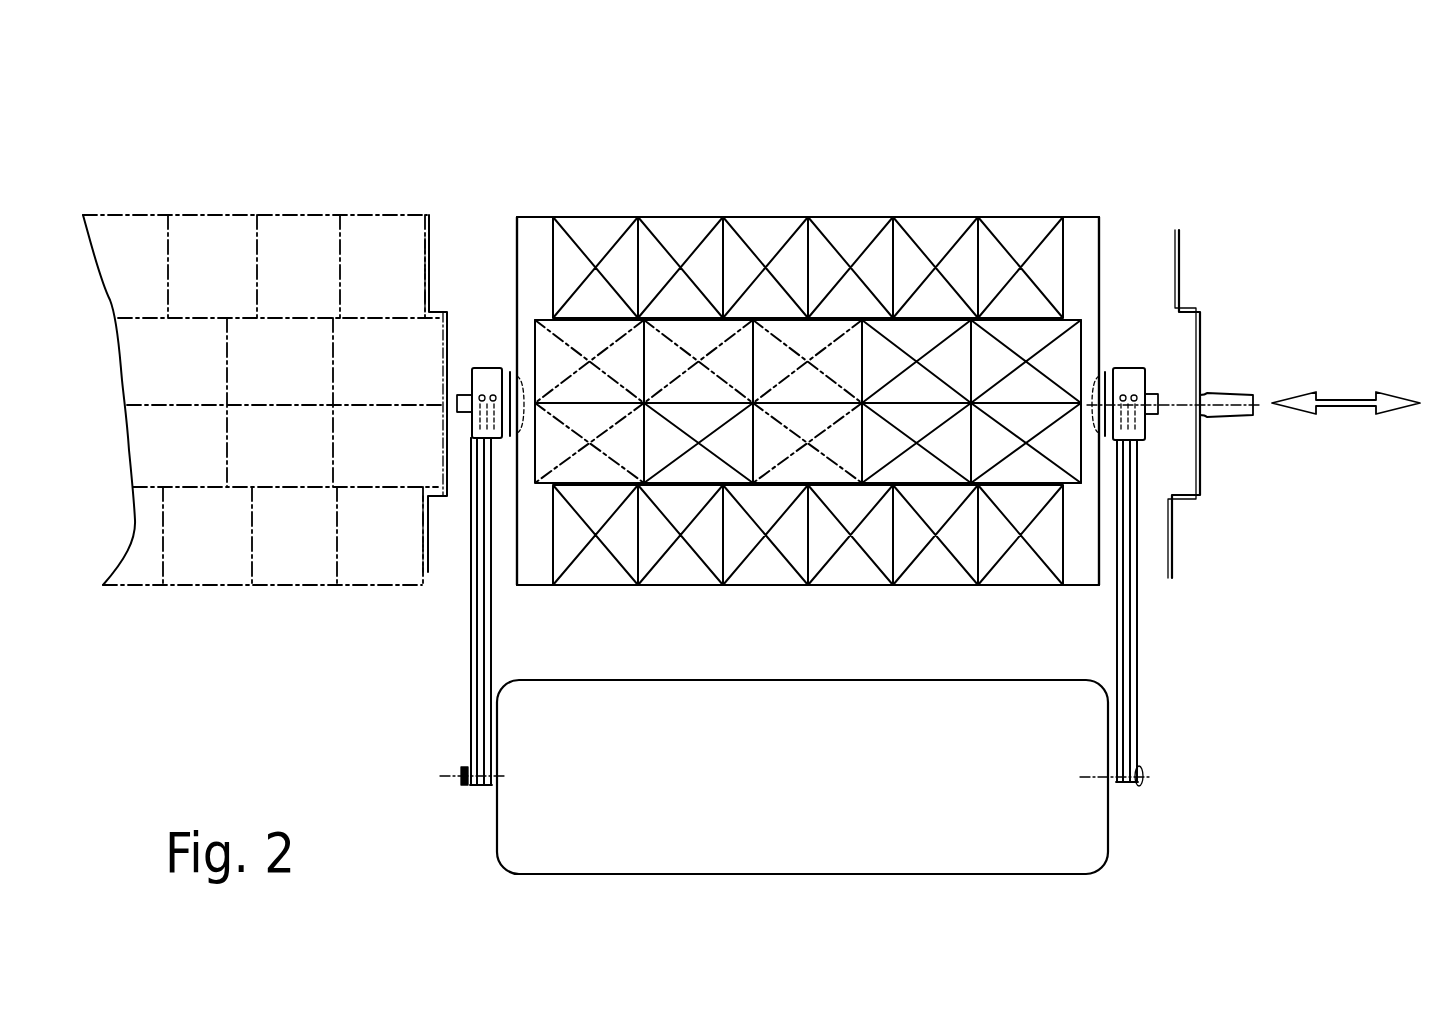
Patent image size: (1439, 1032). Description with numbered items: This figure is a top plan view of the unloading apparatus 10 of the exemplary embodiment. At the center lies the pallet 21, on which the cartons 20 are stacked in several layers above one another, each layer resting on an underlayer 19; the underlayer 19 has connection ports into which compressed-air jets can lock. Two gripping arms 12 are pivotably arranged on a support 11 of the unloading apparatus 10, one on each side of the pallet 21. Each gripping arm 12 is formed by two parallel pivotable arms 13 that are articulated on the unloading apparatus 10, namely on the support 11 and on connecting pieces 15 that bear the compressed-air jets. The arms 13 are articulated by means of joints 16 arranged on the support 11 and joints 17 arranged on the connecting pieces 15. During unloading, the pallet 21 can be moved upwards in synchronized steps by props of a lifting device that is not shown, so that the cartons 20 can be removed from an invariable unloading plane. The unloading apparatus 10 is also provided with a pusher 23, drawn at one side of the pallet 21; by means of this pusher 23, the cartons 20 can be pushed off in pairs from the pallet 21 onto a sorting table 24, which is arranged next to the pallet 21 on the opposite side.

The unloading apparatus 10 is at (368, 713).
The support 11 is at (567, 807).
The gripping arms 12 is at (439, 612).
The pivotable arms 13 is at (487, 653).
The connecting pieces 15 is at (492, 380).
The joints 16 is at (458, 780).
The joints 17 is at (466, 372).
The underlayer 19 is at (1086, 248).
The cartons 20 is at (928, 247).
The pallet 21 is at (731, 192).
The pusher 23 is at (427, 273).
The sorting table 24 is at (313, 343).